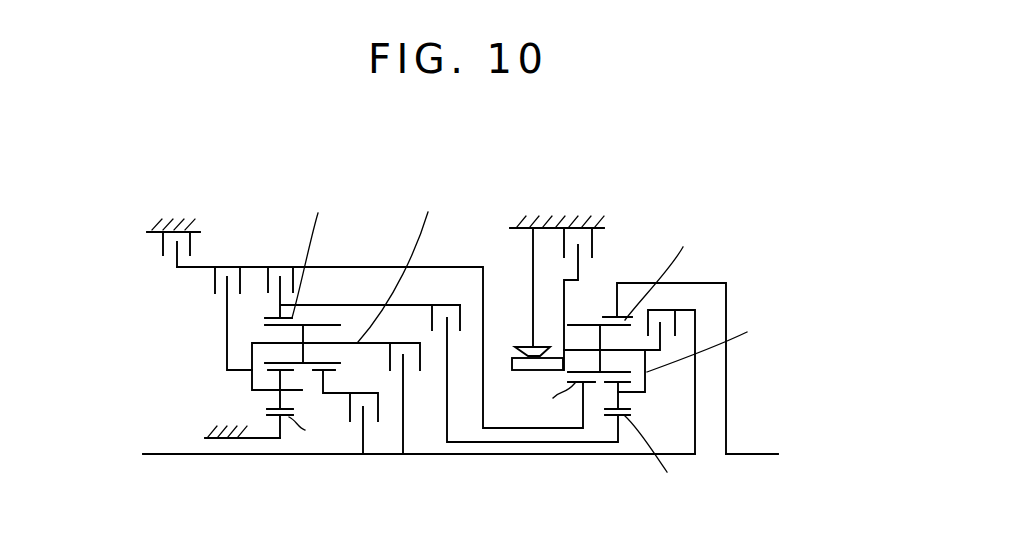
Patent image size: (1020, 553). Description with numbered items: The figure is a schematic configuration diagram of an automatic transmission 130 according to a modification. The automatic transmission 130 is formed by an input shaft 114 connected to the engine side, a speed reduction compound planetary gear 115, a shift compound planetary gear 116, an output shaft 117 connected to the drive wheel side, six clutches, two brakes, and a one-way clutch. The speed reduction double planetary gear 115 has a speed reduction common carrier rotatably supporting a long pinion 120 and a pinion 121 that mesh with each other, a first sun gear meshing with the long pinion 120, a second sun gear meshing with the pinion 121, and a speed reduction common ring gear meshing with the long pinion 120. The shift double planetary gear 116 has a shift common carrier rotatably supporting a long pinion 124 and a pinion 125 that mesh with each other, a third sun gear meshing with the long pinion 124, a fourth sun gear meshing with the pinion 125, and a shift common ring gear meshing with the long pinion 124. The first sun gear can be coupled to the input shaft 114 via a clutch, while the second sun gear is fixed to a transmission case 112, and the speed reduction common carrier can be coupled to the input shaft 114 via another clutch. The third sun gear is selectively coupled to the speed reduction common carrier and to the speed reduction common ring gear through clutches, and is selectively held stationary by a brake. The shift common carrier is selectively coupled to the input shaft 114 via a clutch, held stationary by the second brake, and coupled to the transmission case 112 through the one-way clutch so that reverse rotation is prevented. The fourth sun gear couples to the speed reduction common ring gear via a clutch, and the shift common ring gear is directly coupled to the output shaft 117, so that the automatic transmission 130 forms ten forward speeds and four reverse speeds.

The transmission case 112 is at (190, 226).
The input shaft 114 is at (218, 458).
The speed reduction compound planetary gear 115 is at (385, 253).
The shift compound planetary gear 116 is at (637, 262).
The output shaft 117 is at (745, 453).
The long pinion 120 is at (327, 325).
The pinion 121 is at (270, 409).
The long pinion 124 is at (585, 322).
The pinion 125 is at (623, 408).
The automatic transmission 130 is at (747, 182).